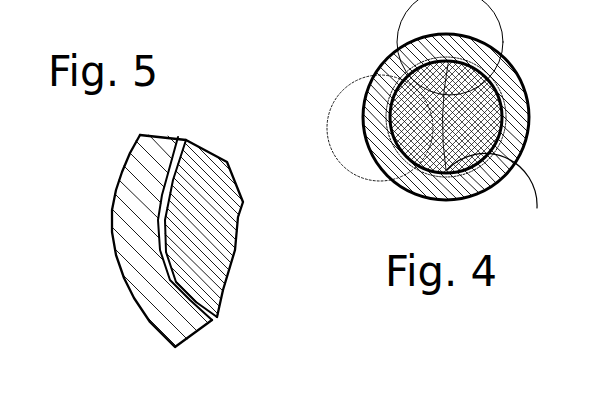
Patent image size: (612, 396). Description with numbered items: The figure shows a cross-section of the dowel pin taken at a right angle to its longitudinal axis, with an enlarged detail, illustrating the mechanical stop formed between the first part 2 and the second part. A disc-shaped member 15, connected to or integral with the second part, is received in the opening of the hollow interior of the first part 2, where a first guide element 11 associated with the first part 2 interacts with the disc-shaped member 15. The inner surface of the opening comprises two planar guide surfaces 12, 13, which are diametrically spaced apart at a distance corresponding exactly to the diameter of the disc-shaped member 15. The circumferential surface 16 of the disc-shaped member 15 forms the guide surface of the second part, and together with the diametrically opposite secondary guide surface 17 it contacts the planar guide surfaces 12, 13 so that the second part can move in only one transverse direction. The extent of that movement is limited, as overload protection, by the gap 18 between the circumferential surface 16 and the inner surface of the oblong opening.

In FIG. 5, the first part 2 is at (98, 180).
In FIG. 4, the first part 2 is at (379, 50).
In FIG. 4, the first guide element 11 is at (405, 177).
In FIG. 4, the planar guide surface 12 is at (458, 62).
In FIG. 4, the planar guide surface 13 is at (448, 173).
In FIG. 5, the disc-shaped member 15 is at (212, 242).
In FIG. 4, the disc-shaped member 15 is at (468, 118).
In FIG. 4, the circumferential surface 16 is at (485, 84).
In FIG. 4, the secondary guide surface 17 is at (493, 195).
In FIG. 5, the gap 18 is at (163, 243).